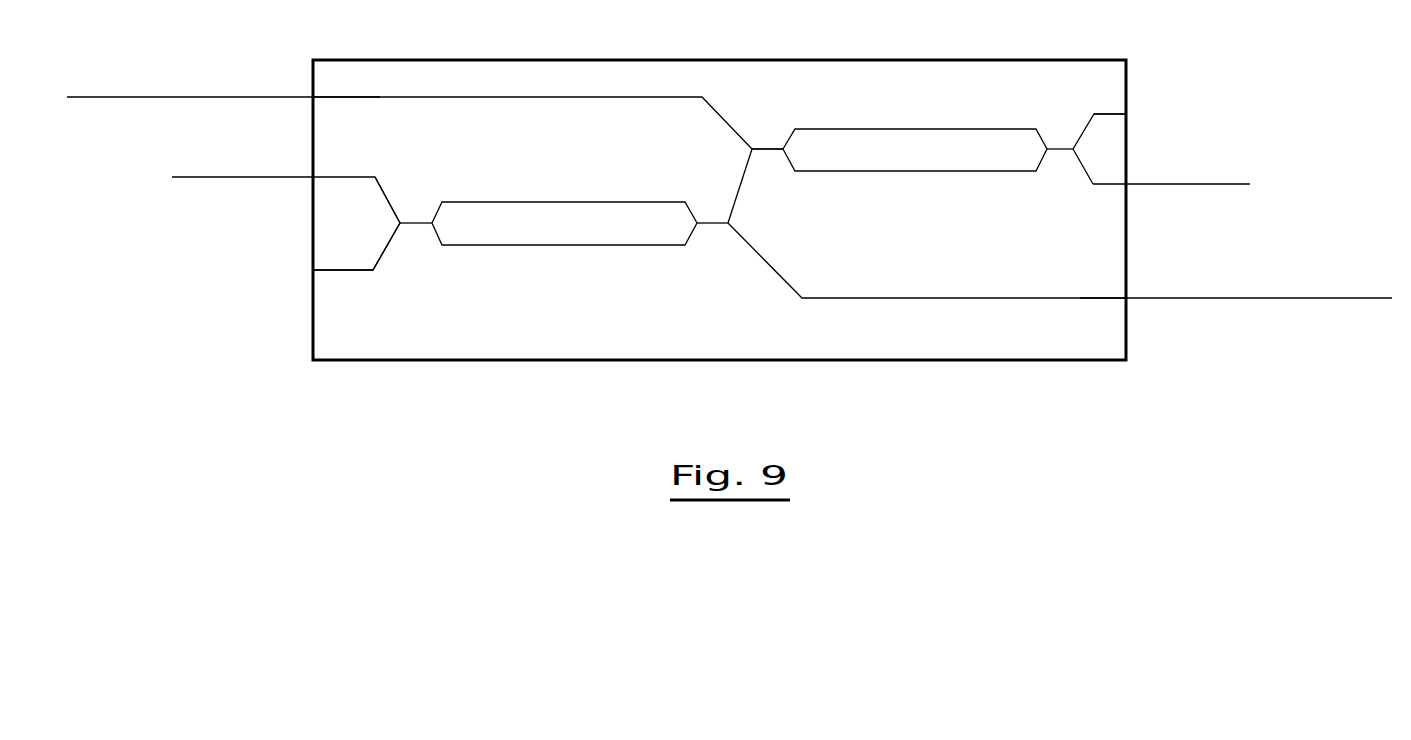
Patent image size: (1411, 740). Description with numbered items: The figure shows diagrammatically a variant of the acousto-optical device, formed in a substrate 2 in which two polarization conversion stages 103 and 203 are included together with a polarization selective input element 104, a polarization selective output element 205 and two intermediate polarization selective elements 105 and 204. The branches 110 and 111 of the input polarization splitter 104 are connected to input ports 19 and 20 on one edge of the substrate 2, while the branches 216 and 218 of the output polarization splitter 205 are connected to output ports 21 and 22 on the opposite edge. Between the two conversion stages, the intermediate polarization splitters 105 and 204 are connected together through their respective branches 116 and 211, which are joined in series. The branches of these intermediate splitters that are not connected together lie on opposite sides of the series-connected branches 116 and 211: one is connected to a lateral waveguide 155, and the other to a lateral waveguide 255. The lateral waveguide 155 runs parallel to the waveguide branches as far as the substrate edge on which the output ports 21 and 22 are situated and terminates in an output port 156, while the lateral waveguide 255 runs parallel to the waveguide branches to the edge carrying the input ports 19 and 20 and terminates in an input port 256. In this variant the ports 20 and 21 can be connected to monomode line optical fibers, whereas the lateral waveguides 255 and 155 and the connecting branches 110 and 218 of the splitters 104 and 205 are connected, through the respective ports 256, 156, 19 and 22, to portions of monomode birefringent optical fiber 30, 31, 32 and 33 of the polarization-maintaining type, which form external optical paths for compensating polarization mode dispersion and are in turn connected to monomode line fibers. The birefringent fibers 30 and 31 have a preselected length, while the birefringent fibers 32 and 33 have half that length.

The substrate 2 is at (794, 102).
The input port 19 is at (315, 180).
The input port 20 is at (312, 269).
The output port 21 is at (1127, 114).
The output port 22 is at (1123, 188).
The birefringent optical fiber 30 is at (188, 97).
The birefringent optical fiber 31 is at (1275, 302).
The birefringent optical fiber 32 is at (217, 179).
The birefringent optical fiber 33 is at (1208, 187).
The polarization conversion stage 103 is at (544, 257).
The polarization selective input element 104 is at (416, 232).
The intermediate polarization selective element 105 is at (711, 233).
The branch 110 is at (342, 177).
The branch 111 is at (350, 272).
The branch 116 is at (737, 195).
The lateral waveguide 155 is at (900, 297).
The output port 156 is at (1123, 297).
The polarization conversion stage 203 is at (899, 119).
The intermediate polarization selective element 204 is at (768, 159).
The polarization selective output element 205 is at (1054, 139).
The branch 211 is at (746, 158).
The branch 216 is at (1085, 127).
The branch 218 is at (1090, 175).
The lateral waveguide 255 is at (497, 100).
The input port 256 is at (314, 98).